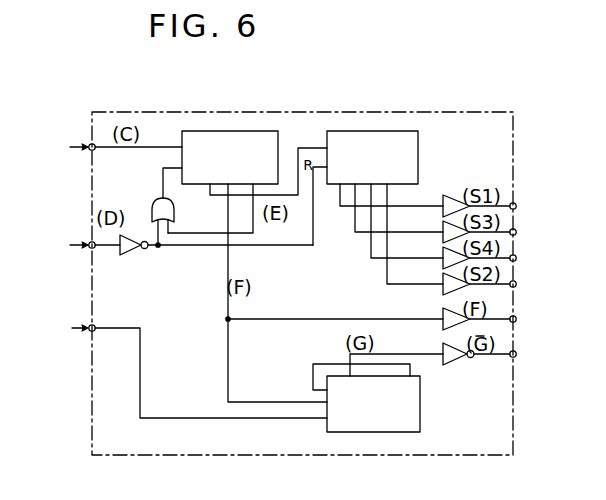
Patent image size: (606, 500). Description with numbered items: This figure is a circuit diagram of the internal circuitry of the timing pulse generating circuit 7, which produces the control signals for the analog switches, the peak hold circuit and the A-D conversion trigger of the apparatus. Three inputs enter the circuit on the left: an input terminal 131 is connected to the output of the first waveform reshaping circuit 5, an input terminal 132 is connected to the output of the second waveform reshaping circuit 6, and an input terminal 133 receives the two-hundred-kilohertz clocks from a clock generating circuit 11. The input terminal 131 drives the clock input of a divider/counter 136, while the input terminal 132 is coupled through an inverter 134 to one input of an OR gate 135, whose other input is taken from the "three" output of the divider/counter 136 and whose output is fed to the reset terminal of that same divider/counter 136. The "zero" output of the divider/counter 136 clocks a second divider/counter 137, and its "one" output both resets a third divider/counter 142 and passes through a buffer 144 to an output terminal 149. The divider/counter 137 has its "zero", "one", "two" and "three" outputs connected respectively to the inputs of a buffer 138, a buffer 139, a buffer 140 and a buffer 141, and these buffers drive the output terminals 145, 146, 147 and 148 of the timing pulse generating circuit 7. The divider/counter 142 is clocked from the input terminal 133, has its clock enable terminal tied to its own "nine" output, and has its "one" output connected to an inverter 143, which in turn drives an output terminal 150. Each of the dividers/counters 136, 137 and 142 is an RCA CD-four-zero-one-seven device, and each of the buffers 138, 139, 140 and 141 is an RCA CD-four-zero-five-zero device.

The timing pulse generating circuit 7 is at (438, 112).
The first waveform reshaping circuit 5 is at (72, 147).
The second waveform reshaping circuit 6 is at (72, 245).
The clock generating circuit 11 is at (69, 329).
The input terminal 131 is at (89, 147).
The input terminal 132 is at (89, 245).
The input terminal 133 is at (89, 328).
The inverter 134 is at (138, 251).
The OR gate 135 is at (166, 204).
The divider/counter 136 is at (216, 130).
The divider/counter 137 is at (371, 131).
The buffer 138 is at (445, 195).
The buffer 139 is at (440, 233).
The buffer 140 is at (440, 259).
The buffer 141 is at (440, 285).
The divider/counter 142 is at (420, 418).
The inverter 143 is at (440, 350).
The buffer 144 is at (440, 314).
The output terminal 145 is at (517, 206).
The output terminal 146 is at (517, 232).
The output terminal 147 is at (517, 258).
The output terminal 148 is at (517, 284).
The output terminal 149 is at (517, 319).
The output terminal 150 is at (517, 354).